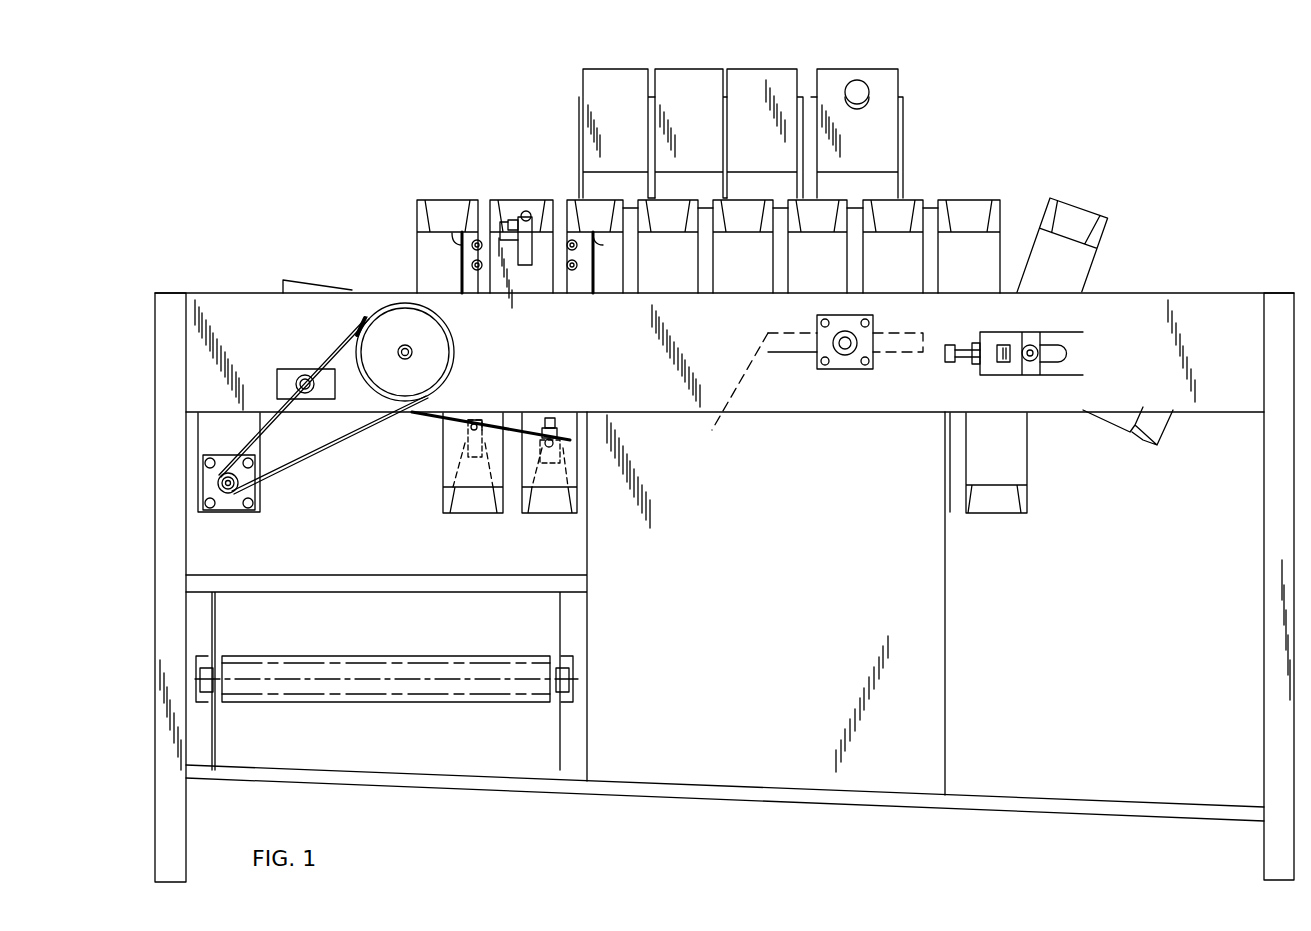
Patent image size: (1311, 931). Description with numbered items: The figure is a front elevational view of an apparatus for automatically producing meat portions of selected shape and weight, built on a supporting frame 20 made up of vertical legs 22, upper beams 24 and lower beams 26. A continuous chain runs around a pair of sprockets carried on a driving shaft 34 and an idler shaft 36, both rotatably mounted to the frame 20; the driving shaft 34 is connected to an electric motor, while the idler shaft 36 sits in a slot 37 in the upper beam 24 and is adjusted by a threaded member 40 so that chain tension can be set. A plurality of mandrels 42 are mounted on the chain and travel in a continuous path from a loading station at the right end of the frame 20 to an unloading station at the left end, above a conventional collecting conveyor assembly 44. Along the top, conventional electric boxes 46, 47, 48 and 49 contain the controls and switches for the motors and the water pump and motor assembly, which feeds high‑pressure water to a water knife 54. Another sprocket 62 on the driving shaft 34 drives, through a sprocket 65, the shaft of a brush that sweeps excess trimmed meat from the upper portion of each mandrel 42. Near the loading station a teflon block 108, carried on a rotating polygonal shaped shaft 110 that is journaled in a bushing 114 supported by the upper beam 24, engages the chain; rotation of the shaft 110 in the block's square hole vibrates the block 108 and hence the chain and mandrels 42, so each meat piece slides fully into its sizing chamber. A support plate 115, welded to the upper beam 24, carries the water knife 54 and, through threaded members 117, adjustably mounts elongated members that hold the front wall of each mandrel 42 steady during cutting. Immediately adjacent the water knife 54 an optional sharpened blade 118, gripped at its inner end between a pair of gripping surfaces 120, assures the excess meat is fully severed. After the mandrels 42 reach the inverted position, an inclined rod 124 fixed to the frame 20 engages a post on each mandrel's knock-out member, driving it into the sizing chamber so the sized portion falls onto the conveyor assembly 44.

The supporting frame 20 is at (210, 240).
The vertical legs 22 is at (158, 383).
The upper beams 24 is at (1147, 295).
The lower beams 26 is at (1115, 813).
The shaft 34 is at (412, 350).
The idler shaft 36 is at (1033, 345).
The slot 37 is at (1065, 353).
The threaded member 40 is at (965, 348).
The mandrels 42 is at (430, 202).
The collecting conveyor assembly 44 is at (392, 656).
The electric box 46 is at (612, 72).
The electric box 47 is at (700, 72).
The electric box 48 is at (763, 72).
The electric box 49 is at (857, 78).
The water knife 54 is at (530, 213).
The sprocket 62 is at (380, 340).
The sprocket 65 is at (232, 500).
The teflon block 108 is at (712, 430).
The polygonal shaped shaft 110 is at (827, 360).
The bushing 114 is at (850, 355).
The support plate 115 is at (498, 285).
The threaded members 117 is at (472, 264).
The sharpened blade 118 is at (508, 230).
The gripping surfaces 120 is at (516, 222).
The inclined rod 124 is at (513, 425).